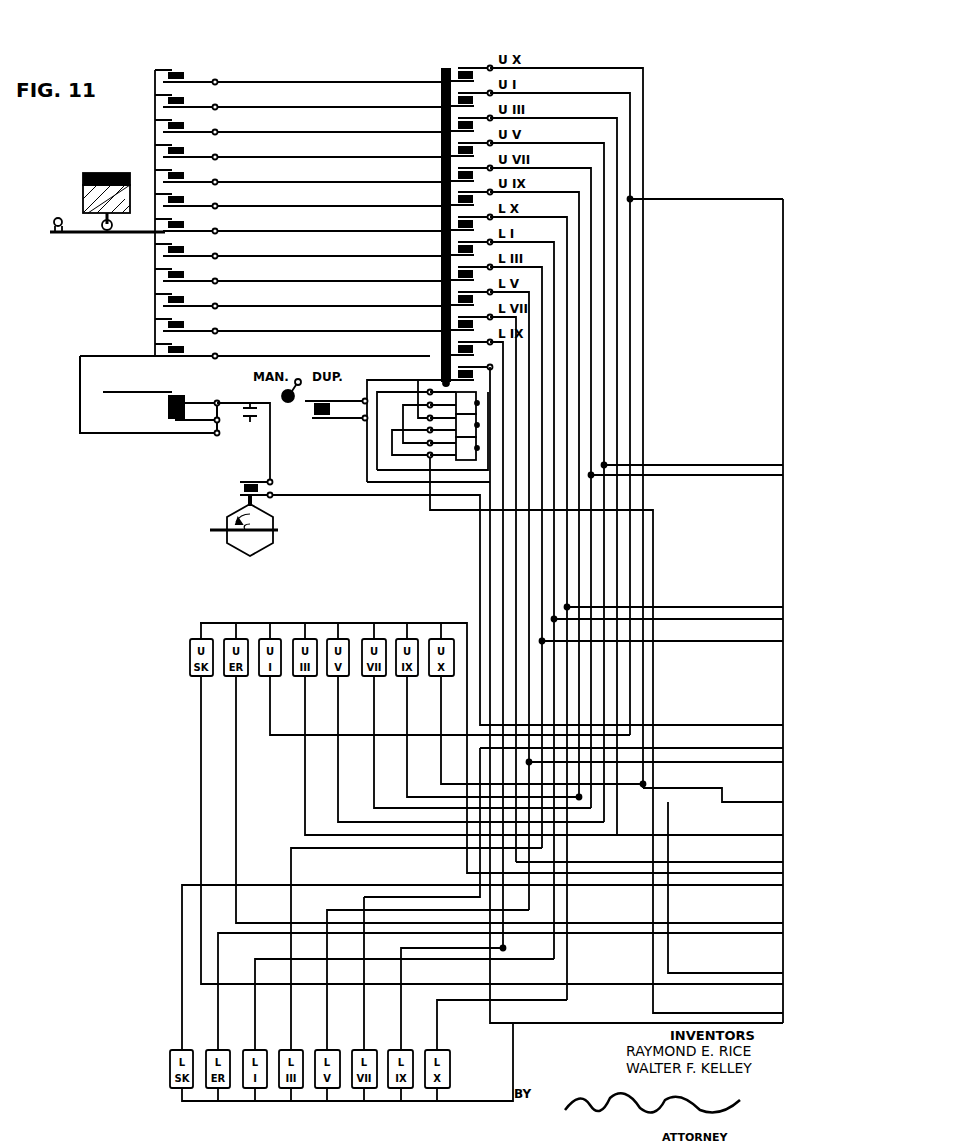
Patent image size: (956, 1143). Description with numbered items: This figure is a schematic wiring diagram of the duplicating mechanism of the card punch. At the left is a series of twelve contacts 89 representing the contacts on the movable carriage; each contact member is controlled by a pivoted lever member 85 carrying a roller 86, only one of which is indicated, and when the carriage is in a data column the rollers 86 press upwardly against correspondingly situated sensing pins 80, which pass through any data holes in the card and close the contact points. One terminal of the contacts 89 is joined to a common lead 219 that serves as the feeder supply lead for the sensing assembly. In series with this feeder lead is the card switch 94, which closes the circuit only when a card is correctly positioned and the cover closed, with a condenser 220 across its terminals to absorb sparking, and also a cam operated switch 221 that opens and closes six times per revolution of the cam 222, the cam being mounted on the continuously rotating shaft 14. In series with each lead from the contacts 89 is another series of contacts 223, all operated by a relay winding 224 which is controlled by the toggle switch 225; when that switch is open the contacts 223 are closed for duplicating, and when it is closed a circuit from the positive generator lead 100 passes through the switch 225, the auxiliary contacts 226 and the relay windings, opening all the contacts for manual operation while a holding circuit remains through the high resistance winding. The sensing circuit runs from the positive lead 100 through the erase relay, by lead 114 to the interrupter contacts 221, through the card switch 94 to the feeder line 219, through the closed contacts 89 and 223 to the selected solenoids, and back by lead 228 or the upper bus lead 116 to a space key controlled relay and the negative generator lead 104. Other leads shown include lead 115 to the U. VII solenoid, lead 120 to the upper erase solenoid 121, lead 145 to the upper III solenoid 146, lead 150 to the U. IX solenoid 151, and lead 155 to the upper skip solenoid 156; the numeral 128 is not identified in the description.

The contacts 89 is at (178, 103).
The common lead 219 is at (160, 132).
The contacts 223 is at (460, 72).
The sensing pins 80 is at (100, 228).
The roller 86 is at (85, 236).
The pivoted lever member 85 is at (112, 236).
The card switch 94 is at (166, 410).
The condenser 220 is at (255, 430).
The cam operated switch 221 is at (240, 488).
The cam 222 is at (250, 548).
The shaft 14 is at (268, 536).
The toggle switch 225 is at (318, 412).
The auxiliary contacts 226 is at (434, 382).
The positive generator lead 100 is at (367, 462).
The relay winding 224 is at (465, 462).
The lead 115 is at (708, 478).
The negative generator lead 104 is at (655, 542).
The upper bus lead 116 is at (320, 622).
The upper skip solenoid 156 is at (190, 656).
The upper erase solenoid 121 is at (247, 660).
The upper III solenoid 146 is at (317, 660).
The U. IX solenoid 151 is at (418, 660).
The lead 155 is at (200, 698).
The lead 120 is at (236, 795).
The lead 145 is at (306, 805).
The lead 150 is at (408, 790).
The lead 114 is at (754, 734).
The lower erase relay 128 is at (210, 1052).
The lead 228 is at (298, 1102).